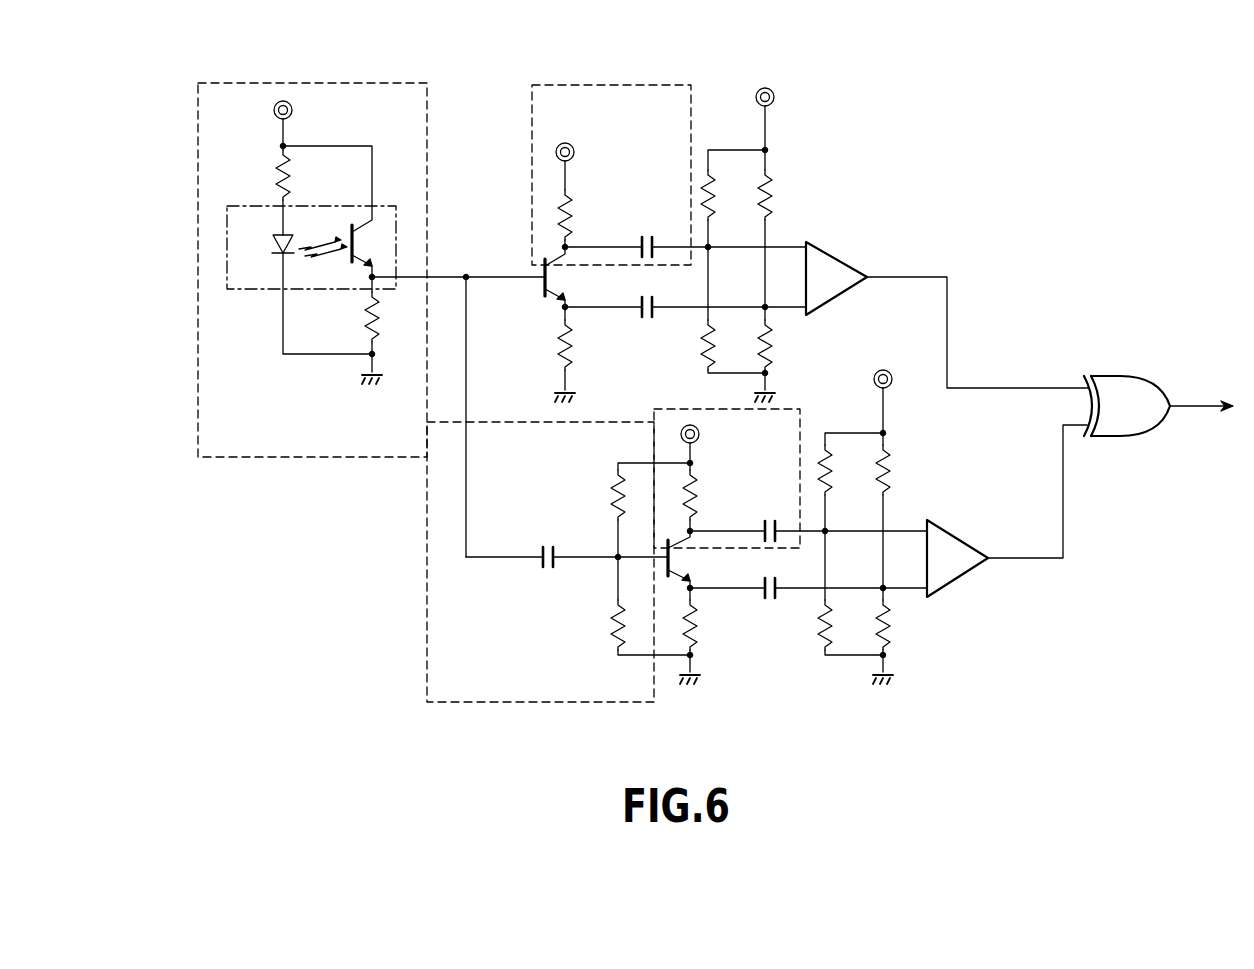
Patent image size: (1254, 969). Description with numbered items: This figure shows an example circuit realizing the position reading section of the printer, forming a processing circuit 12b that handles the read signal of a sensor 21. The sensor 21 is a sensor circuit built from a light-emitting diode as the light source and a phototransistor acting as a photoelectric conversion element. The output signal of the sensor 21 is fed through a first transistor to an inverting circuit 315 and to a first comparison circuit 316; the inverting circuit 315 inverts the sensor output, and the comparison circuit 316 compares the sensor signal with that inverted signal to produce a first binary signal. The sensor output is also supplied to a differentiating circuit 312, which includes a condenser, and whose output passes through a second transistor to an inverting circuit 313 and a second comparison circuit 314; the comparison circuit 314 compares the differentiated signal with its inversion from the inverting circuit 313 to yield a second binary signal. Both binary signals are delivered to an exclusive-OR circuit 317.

The detection circuit 12b is at (649, 69).
The sensor 21 is at (196, 97).
The inverting circuit 315 is at (530, 97).
The inverting circuit 313 is at (662, 407).
The differentiating circuit 312 is at (425, 614).
The comparison circuit 316 is at (851, 265).
The comparison circuit 314 is at (964, 575).
The EX-OR circuit 317 is at (1115, 375).